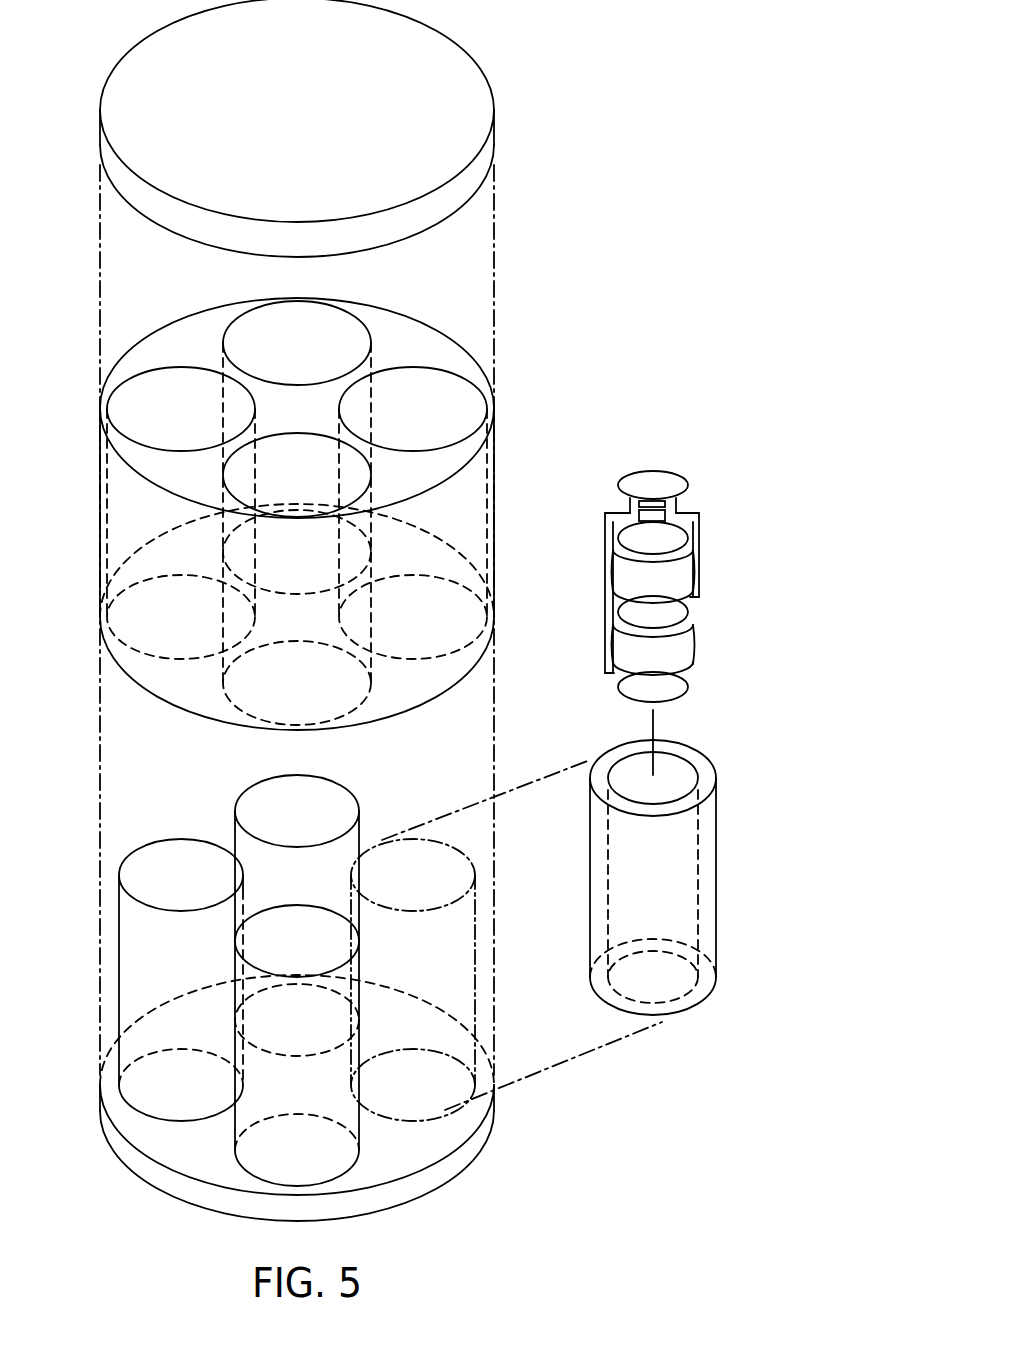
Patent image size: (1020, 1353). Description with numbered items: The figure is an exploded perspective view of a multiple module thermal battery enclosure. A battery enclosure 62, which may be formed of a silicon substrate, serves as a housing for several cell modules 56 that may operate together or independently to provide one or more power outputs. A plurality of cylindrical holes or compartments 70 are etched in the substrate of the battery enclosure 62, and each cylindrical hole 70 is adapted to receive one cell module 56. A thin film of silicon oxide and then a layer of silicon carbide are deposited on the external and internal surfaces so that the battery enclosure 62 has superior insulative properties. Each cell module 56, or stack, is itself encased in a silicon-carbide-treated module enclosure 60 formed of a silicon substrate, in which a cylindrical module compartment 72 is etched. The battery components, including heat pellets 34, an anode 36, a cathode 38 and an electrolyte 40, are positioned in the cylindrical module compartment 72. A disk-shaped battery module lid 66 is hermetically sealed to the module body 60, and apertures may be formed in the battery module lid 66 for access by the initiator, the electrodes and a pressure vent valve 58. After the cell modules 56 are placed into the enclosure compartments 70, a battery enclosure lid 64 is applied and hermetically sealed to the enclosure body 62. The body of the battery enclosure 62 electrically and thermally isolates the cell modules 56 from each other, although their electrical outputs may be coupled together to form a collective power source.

The heat pellets 34 is at (688, 536).
The anode 36 is at (612, 572).
The cathode 38 is at (612, 650).
The electrolyte 40 is at (688, 612).
The cell module 56 is at (314, 1098).
The pressure vent valve 58 is at (649, 478).
The module enclosure 60 is at (300, 1172).
The battery enclosure 62 is at (100, 512).
The battery enclosure lid 64 is at (493, 130).
The battery module lid 66 is at (618, 483).
The cylindrical hole 70 is at (113, 626).
The cylindrical module compartment 72 is at (700, 882).